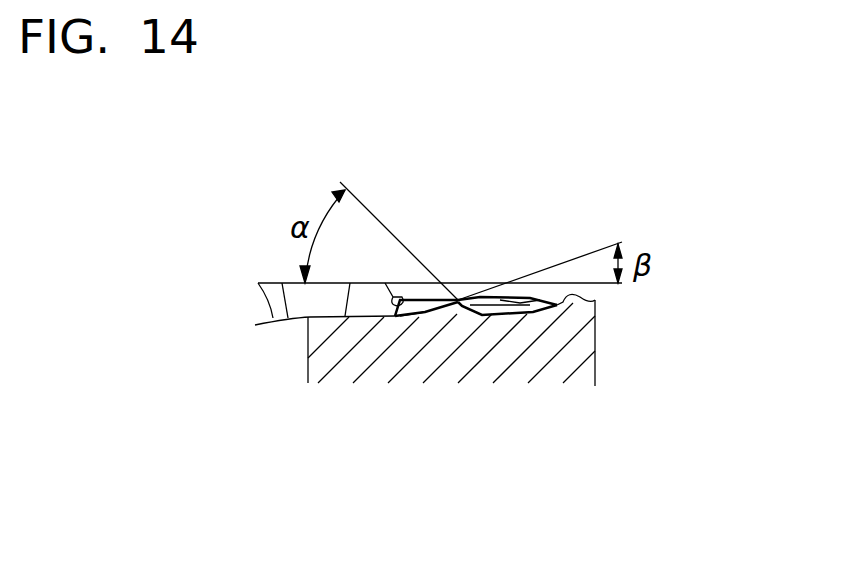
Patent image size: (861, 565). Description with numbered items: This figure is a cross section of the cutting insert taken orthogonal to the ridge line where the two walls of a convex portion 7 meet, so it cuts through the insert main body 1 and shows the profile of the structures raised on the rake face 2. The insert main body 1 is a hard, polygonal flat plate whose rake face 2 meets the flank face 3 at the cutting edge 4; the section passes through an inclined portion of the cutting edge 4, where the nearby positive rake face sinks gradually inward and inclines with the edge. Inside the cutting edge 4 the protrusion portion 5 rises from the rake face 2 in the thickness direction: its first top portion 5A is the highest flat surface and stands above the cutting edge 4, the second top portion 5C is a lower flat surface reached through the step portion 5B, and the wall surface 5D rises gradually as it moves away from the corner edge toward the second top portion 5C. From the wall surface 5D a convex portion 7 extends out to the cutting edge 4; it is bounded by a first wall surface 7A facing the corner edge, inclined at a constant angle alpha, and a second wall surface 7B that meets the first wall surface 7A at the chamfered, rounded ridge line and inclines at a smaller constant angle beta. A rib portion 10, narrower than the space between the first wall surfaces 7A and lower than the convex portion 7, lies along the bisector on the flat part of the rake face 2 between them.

The insert main body 1 is at (578, 376).
The rake face 2 is at (593, 318).
The flank face 3 is at (288, 362).
The cutting edge 4 is at (258, 283).
The protrusion portion 5 is at (563, 128).
The first top portion 5A is at (367, 283).
The step portion 5B is at (407, 283).
The second top portion 5C is at (445, 295).
The wall surface 5D is at (498, 317).
The convex portion 7 is at (495, 462).
The first wall surface 7A is at (487, 314).
The second wall surface 7B is at (410, 315).
The rib portion 10 is at (535, 293).